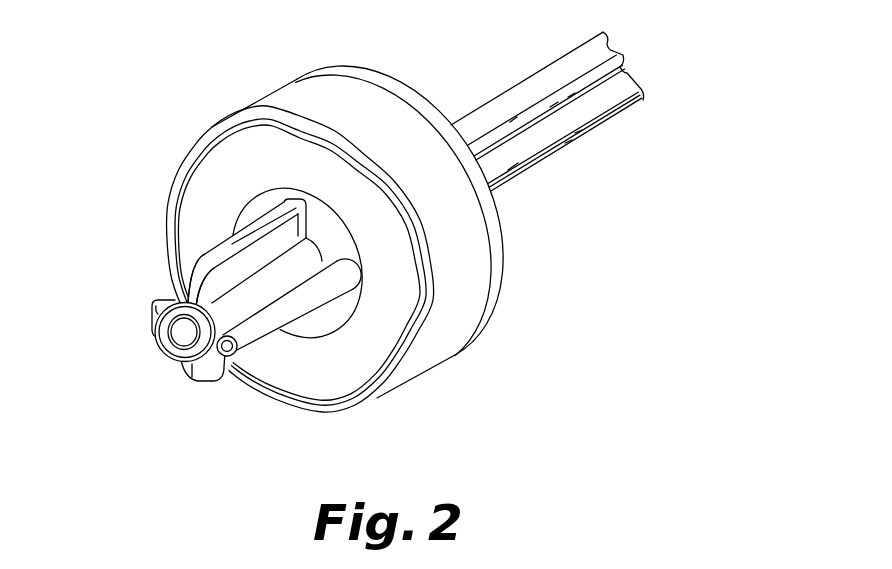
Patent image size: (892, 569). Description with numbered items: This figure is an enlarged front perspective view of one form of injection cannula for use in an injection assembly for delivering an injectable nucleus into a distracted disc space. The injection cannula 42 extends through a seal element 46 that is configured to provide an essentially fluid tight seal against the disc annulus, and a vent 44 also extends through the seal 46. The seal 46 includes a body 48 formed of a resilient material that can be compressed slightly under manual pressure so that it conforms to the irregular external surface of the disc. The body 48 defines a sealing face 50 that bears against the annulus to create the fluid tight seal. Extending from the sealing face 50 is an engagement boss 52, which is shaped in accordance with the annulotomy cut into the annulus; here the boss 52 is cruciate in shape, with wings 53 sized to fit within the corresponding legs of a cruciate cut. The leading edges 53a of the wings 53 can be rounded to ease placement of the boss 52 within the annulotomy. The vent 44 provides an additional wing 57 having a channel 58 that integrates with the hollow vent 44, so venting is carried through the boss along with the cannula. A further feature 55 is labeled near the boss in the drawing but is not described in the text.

The injection cannula 42 is at (526, 102).
The vent 44 is at (560, 150).
The seal element 46 is at (440, 357).
The body 48 is at (470, 297).
The sealing face 50 is at (360, 353).
The engagement boss 52 is at (188, 277).
The wings 53 is at (206, 260).
The leading edges 53a is at (179, 290).
The pivot boss 55 is at (183, 336).
The additional wing 57 is at (280, 325).
The channel 58 is at (220, 356).